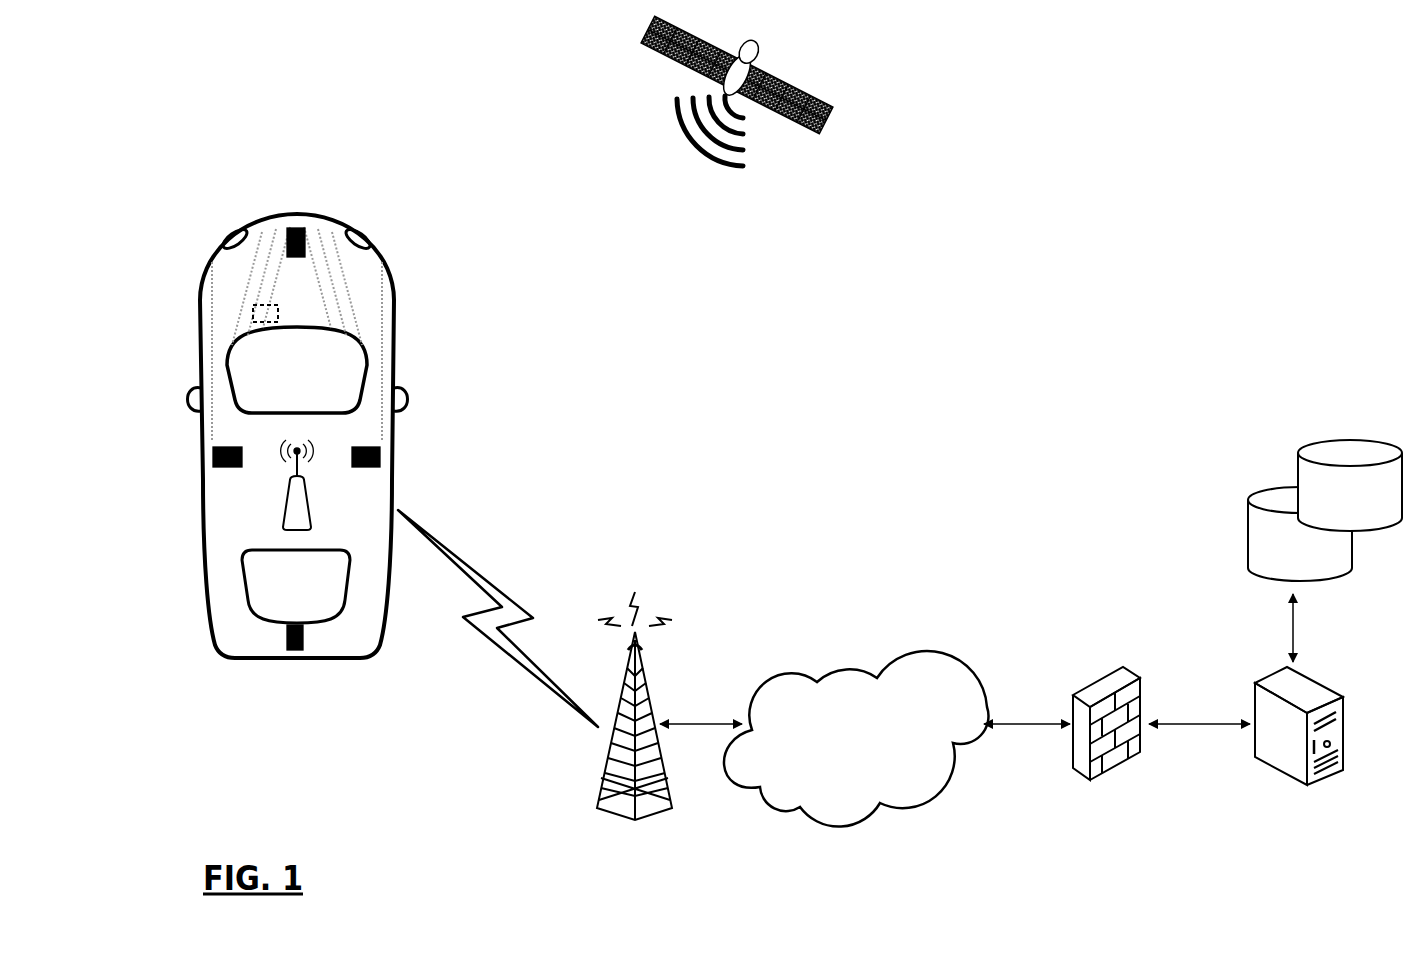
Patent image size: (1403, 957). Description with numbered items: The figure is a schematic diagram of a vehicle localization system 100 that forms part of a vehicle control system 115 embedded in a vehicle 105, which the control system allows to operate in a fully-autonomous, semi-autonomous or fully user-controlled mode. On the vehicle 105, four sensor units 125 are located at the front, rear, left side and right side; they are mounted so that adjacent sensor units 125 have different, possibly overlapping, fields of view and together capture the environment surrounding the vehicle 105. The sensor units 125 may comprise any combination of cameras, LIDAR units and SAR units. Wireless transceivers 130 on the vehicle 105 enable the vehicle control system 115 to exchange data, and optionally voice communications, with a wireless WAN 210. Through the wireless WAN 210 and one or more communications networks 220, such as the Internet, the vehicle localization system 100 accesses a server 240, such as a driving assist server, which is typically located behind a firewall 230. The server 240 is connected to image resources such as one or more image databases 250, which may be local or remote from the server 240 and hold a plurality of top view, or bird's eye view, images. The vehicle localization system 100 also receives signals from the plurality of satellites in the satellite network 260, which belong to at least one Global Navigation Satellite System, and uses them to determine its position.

The vehicle localization system 100 is at (320, 145).
The vehicle 105 is at (386, 262).
The vehicle control system 115 is at (258, 310).
The sensor units 125 is at (297, 226).
The wireless transceivers 130 is at (285, 505).
The wireless WAN 210 is at (642, 739).
The communications networks 220 is at (856, 739).
The firewall 230 is at (1107, 749).
The server 240 is at (1298, 749).
The image database 250 is at (1239, 510).
The satellite network 260 is at (742, 103).